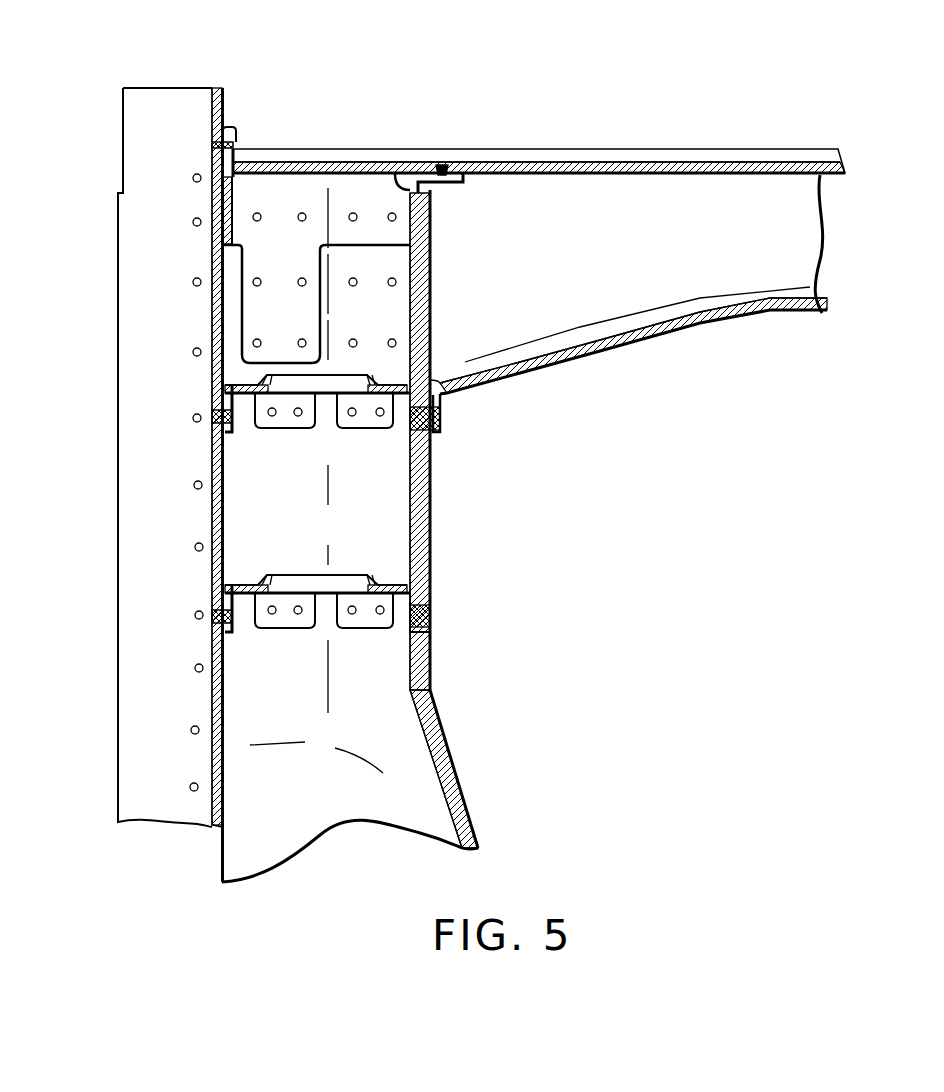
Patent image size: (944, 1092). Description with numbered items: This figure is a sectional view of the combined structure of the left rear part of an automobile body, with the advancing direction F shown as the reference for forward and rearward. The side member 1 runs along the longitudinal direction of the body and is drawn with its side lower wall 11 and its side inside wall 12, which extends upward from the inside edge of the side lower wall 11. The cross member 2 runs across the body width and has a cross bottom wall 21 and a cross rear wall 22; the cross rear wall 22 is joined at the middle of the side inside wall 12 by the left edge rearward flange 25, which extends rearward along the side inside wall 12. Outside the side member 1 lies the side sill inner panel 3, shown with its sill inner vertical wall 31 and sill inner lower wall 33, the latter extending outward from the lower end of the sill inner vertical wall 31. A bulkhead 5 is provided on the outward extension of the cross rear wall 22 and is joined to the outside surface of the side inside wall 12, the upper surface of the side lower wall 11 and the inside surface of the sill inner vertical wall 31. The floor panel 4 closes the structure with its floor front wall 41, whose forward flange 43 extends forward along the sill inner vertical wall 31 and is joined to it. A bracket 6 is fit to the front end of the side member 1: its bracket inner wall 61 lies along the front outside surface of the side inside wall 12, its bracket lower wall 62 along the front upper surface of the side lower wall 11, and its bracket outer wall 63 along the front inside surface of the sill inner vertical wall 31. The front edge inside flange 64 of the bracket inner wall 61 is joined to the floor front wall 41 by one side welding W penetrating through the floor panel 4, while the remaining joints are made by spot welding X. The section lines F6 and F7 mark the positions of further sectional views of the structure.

The side member 1 is at (371, 536).
The side lower wall 11 is at (365, 692).
The side inside wall 12 is at (434, 522).
The cross member 2 is at (654, 295).
The cross bottom wall 21 is at (825, 236).
The cross rear wall 22 is at (760, 313).
The left edge rearward flange 25 is at (452, 398).
The side sill inner panel 3 is at (147, 446).
The sill inner vertical wall 31 is at (215, 518).
The sill inner lower wall 33 is at (128, 364).
The floor panel 4 is at (539, 121).
The floor front wall 41 is at (718, 160).
The forward flange 43 is at (232, 132).
The bulkhead 5 is at (328, 386).
The bracket 6 is at (378, 211).
The bracket inner wall 61 is at (393, 164).
The bracket lower wall 62 is at (313, 190).
The bracket outer wall 63 is at (235, 188).
The front edge inside flange 64 is at (468, 185).
The one side welding W is at (443, 164).
The spot welding X is at (194, 175).
The automobile advancing direction F is at (655, 705).
The section line F6 is at (167, 420).
The section line F7 is at (167, 218).